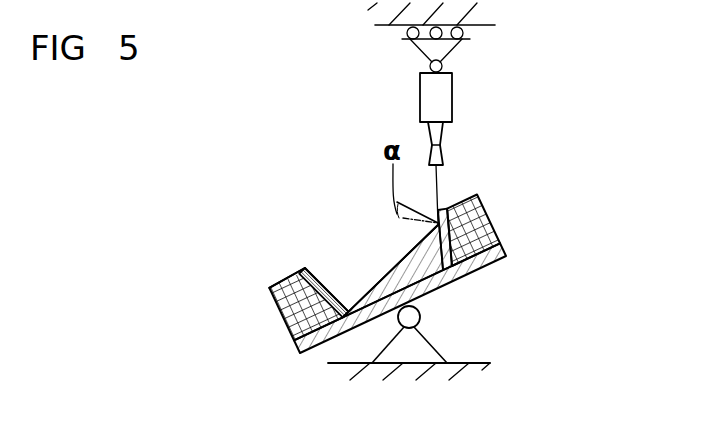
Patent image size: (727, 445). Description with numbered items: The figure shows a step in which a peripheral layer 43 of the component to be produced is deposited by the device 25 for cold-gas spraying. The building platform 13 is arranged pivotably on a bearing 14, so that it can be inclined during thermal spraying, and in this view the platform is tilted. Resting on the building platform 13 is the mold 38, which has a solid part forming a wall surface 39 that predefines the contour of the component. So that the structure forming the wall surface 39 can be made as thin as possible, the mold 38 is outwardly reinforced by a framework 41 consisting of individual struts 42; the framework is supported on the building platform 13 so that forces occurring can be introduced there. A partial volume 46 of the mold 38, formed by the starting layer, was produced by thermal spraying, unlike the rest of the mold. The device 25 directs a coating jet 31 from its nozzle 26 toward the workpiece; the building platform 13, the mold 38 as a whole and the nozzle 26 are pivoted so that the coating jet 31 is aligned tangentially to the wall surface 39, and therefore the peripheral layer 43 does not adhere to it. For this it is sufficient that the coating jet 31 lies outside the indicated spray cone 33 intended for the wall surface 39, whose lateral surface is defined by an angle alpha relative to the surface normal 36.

The building platform 13 is at (300, 346).
The bearing 14 is at (418, 347).
The device for cold-gas spraying 25 is at (463, 102).
The nozzle 26 is at (443, 153).
The coating jet 31 is at (452, 183).
The spray cone 33 is at (401, 217).
The surface normal 36 is at (396, 214).
The mold 38 is at (270, 274).
The wall surface 39 is at (326, 276).
The framework 41 is at (272, 314).
The struts 42 is at (492, 221).
The peripheral layer 43 is at (410, 247).
The partial volume 46 is at (418, 284).